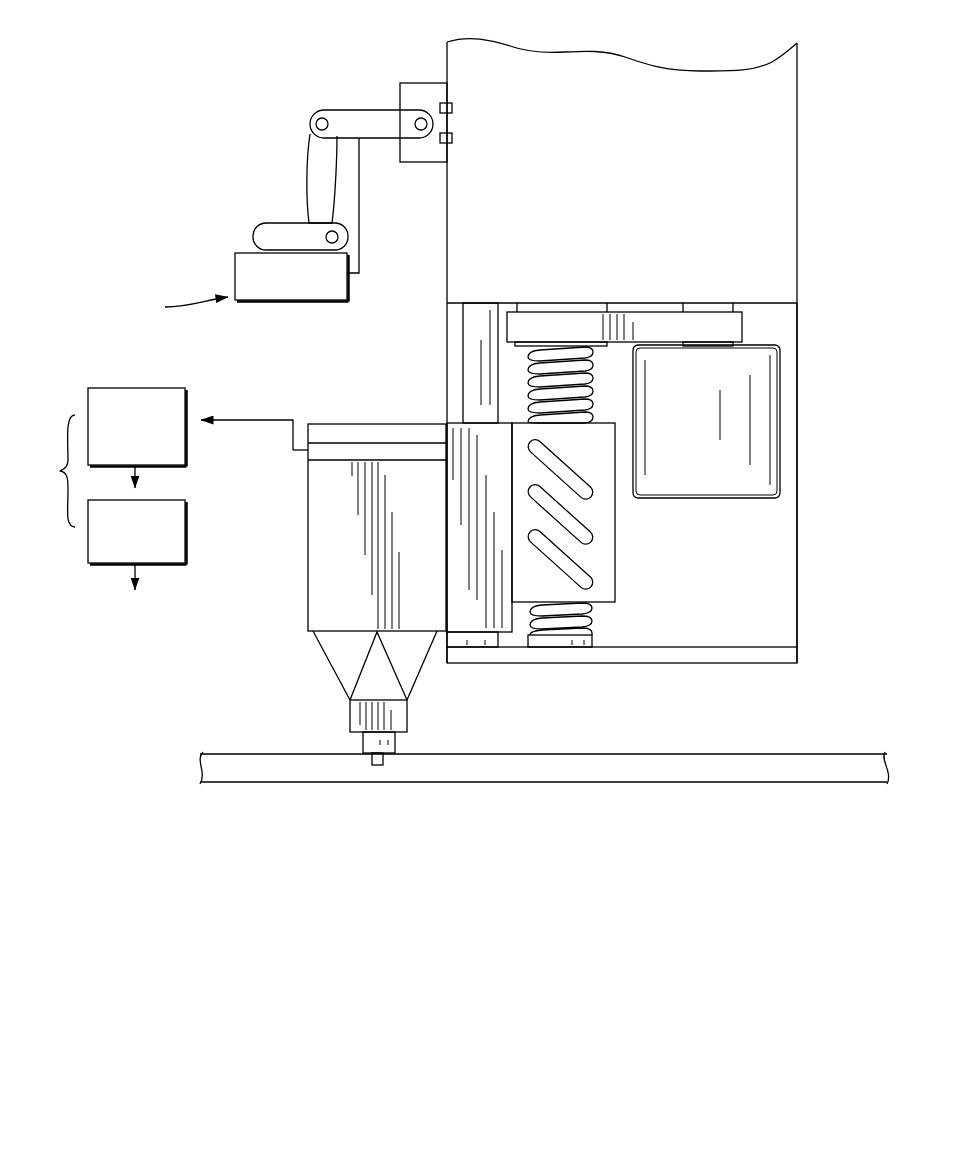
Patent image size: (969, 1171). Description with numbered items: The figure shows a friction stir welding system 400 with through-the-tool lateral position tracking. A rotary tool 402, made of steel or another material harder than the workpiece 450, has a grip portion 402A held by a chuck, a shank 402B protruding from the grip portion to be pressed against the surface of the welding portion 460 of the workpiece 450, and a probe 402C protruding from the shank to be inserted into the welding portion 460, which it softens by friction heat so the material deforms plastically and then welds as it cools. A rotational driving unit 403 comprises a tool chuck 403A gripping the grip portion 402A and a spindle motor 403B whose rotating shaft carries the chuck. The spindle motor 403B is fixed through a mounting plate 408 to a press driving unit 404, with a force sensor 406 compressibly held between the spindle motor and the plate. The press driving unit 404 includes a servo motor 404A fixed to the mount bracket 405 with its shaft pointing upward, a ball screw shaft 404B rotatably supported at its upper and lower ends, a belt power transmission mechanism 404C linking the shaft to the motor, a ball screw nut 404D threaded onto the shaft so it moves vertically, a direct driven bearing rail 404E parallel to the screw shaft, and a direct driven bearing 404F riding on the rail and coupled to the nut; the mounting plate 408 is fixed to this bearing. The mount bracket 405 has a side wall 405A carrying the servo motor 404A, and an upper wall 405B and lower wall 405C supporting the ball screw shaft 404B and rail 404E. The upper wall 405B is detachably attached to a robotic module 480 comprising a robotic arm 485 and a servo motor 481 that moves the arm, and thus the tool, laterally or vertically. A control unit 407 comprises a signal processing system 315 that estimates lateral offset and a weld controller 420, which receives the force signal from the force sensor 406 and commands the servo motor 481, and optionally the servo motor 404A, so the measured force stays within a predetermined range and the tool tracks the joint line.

The signal processing system 315 is at (155, 440).
The friction stir welding system 400 is at (326, 911).
The rotary tool 402 is at (360, 753).
The grip portion 402A is at (407, 712).
The shank 402B is at (395, 745).
The probe 402C is at (373, 757).
The rotational driving unit 403 is at (323, 524).
The tool chuck 403A is at (320, 656).
The spindle motor 403B is at (308, 533).
The press driving unit 404 is at (630, 501).
The servo motor 404A is at (780, 457).
The ball screw shaft 404B is at (597, 620).
The belt power transmission mechanism 404C is at (750, 332).
The ball screw nut 404D is at (617, 570).
The direct driven bearing rail 404E is at (463, 333).
The direct driven bearing 404F is at (480, 423).
The mount bracket 405 is at (802, 520).
The side wall 405A is at (797, 398).
The upper wall 405B is at (797, 288).
The lower wall 405C is at (797, 657).
The force sensor 406 is at (293, 450).
The control unit 407 is at (58, 471).
The mounting plate 408 is at (318, 424).
The weld controller 420 is at (155, 545).
The workpiece 450 is at (788, 746).
The welding portion 460 is at (694, 770).
The robotic module 480 is at (280, 193).
The servo motor 481 is at (310, 290).
The robotic arm 485 is at (347, 108).